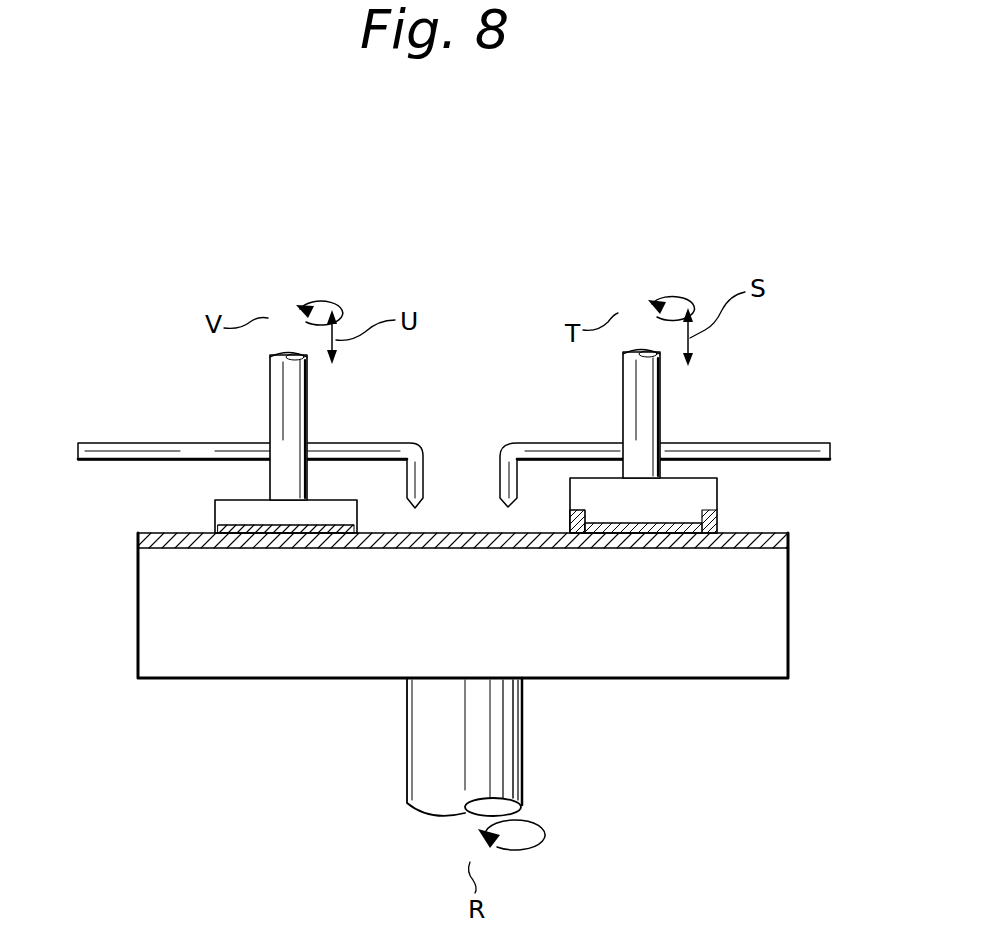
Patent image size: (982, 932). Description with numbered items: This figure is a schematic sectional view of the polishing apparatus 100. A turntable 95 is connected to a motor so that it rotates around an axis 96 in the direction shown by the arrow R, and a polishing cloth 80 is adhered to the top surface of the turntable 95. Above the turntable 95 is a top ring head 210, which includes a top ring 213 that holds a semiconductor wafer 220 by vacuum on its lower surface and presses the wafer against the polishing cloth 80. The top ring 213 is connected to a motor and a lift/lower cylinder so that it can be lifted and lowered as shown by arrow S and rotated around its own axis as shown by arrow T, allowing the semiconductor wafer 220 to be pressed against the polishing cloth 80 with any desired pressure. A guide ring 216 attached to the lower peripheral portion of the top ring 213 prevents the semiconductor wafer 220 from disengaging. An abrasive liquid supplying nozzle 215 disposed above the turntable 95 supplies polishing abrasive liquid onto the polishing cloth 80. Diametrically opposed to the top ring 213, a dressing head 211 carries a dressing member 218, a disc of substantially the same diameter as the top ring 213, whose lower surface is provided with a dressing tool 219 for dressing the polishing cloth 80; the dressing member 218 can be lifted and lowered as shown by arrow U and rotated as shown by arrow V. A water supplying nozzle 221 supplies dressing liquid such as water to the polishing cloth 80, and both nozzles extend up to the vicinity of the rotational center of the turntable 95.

The polishing apparatus 100 is at (475, 270).
The polishing cloth 80 is at (162, 538).
The turntable 95 is at (760, 620).
The axis 96 is at (423, 765).
The water supplying nozzle 221 is at (102, 450).
The abrasive liquid supplying nozzle 215 is at (753, 443).
The dressing member 218 is at (250, 515).
The dressing tool 219 is at (305, 528).
The dressing head 211 is at (308, 405).
The top ring 213 is at (703, 498).
The semiconductor wafer 220 is at (612, 525).
The guide ring 216 is at (565, 523).
The top ring head 210 is at (675, 430).